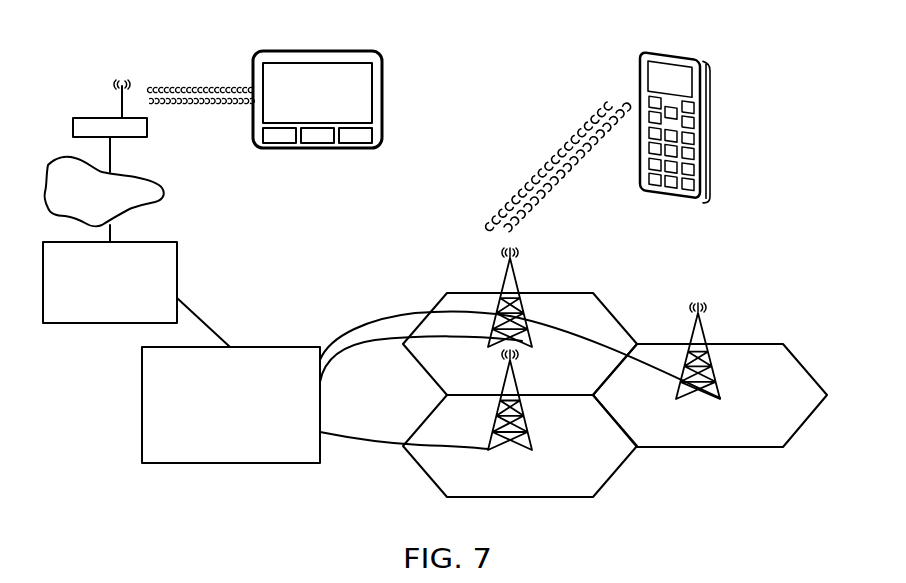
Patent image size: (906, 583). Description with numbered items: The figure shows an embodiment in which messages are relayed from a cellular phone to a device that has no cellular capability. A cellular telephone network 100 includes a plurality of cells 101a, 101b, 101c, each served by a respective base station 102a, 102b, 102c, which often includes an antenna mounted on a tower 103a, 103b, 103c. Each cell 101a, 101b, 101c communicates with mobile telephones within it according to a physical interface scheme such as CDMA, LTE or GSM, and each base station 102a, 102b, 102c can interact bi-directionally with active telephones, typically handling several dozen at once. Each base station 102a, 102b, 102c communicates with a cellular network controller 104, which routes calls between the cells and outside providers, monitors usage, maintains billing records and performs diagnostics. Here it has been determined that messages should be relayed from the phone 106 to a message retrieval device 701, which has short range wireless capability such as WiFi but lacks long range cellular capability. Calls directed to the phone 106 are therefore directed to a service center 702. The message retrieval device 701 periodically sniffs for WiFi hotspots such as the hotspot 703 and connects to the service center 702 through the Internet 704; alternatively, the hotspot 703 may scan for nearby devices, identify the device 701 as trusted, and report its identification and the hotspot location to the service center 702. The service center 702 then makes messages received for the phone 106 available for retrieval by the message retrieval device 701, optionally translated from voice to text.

The cellular telephone network 100 is at (754, 236).
The cell 101a is at (452, 302).
The cell 101b is at (770, 433).
The cell 101c is at (448, 468).
The base station 102a is at (532, 341).
The base station 102b is at (723, 388).
The base station 102c is at (513, 450).
The tower 103a is at (497, 287).
The tower 103b is at (708, 358).
The tower 103c is at (498, 412).
The cellular network controller 104 is at (152, 453).
The phone 106 is at (639, 75).
The message retrieval device 701 is at (382, 92).
The service center 702 is at (78, 317).
The hotspot 703 is at (100, 123).
The Internet 704 is at (163, 195).